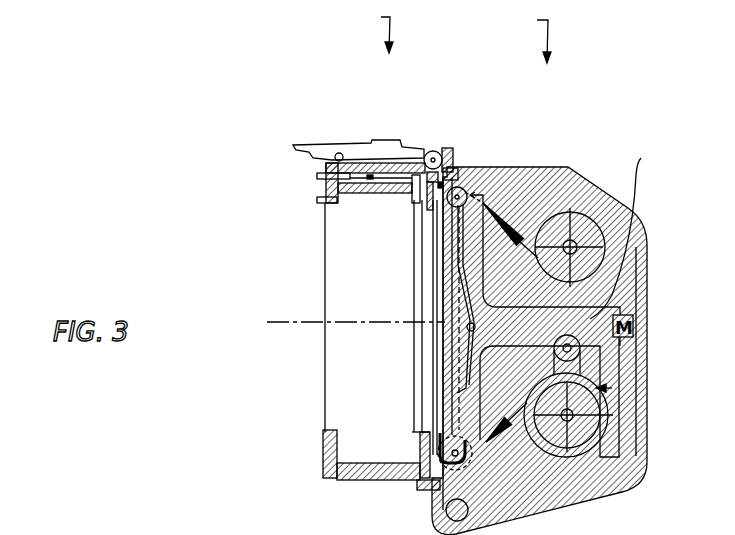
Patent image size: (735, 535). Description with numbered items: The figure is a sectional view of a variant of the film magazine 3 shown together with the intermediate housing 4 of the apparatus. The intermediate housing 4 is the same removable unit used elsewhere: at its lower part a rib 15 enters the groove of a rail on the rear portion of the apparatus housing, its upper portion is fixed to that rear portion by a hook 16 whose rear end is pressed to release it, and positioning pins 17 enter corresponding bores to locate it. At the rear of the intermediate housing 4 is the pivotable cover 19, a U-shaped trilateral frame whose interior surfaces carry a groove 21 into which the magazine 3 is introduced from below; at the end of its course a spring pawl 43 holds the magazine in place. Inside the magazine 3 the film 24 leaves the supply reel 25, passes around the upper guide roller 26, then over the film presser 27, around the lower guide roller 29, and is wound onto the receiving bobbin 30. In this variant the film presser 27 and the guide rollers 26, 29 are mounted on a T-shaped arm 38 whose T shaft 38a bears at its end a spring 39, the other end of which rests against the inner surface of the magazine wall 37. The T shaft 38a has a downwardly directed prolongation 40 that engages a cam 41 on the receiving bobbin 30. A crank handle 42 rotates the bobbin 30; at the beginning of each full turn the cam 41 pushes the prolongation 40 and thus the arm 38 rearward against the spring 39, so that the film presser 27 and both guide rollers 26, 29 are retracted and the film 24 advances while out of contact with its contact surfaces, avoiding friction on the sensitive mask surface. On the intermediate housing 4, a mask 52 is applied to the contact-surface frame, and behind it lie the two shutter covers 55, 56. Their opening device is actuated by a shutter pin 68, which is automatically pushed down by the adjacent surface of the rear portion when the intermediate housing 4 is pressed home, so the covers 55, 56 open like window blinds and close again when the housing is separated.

The magazine 3 is at (535, 35).
The intermediate housing 4 is at (379, 30).
The rib 15 is at (328, 480).
The hook 16 is at (316, 150).
The positioning pins 17 is at (318, 199).
The cover 19 is at (448, 142).
The groove 21 is at (437, 148).
The film 24 is at (513, 227).
The supply reel 25 is at (587, 232).
The upper guide roller 26 is at (484, 197).
The film presser 27 is at (448, 258).
The lower guide roller 29 is at (463, 465).
The receiving bobbin 30 is at (582, 432).
The wall 37 is at (566, 351).
The T-shaped arm 38 is at (482, 269).
The T shaft 38a is at (641, 158).
The spring 39 is at (643, 281).
The prolongation 40 is at (607, 370).
The cam 41 is at (612, 388).
The crank handle 42 is at (555, 360).
The spring pawl 43 is at (424, 517).
The mask 52 is at (458, 167).
The shutter cover 55 is at (422, 345).
The shutter cover 56 is at (394, 316).
The shutter pin 68 is at (318, 176).